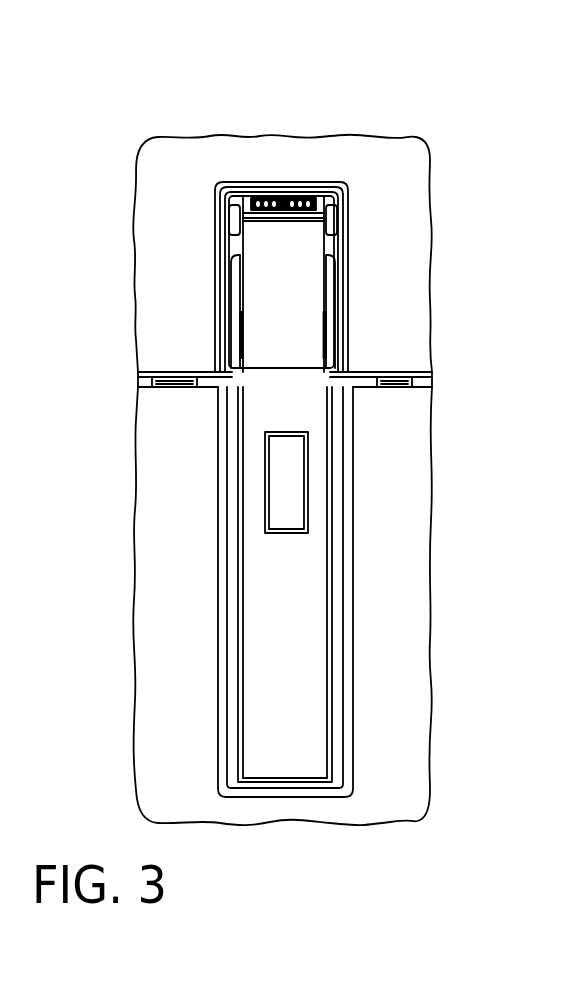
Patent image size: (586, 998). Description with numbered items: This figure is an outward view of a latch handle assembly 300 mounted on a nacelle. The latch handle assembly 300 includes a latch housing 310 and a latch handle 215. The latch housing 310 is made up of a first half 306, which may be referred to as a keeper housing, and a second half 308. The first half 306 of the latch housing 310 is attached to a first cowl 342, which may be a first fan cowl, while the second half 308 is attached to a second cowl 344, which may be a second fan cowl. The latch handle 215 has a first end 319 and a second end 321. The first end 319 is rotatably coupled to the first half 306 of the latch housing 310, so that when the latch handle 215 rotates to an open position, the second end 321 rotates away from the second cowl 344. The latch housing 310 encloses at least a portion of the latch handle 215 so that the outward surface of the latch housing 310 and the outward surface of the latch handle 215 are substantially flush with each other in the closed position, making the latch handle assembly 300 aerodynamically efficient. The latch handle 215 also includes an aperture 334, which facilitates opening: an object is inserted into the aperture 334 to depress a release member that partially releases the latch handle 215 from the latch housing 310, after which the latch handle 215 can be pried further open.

The latch handle assembly 300 is at (437, 97).
The first half of latch housing 306 is at (340, 224).
The second half of latch housing 308 is at (396, 699).
The latch housing 310 is at (237, 465).
The first end 319 is at (283, 200).
The second end 321 is at (290, 780).
The aperture 334 is at (308, 495).
The first cowl 342 is at (198, 190).
The second cowl 344 is at (198, 534).
The latch handle 215 is at (305, 593).